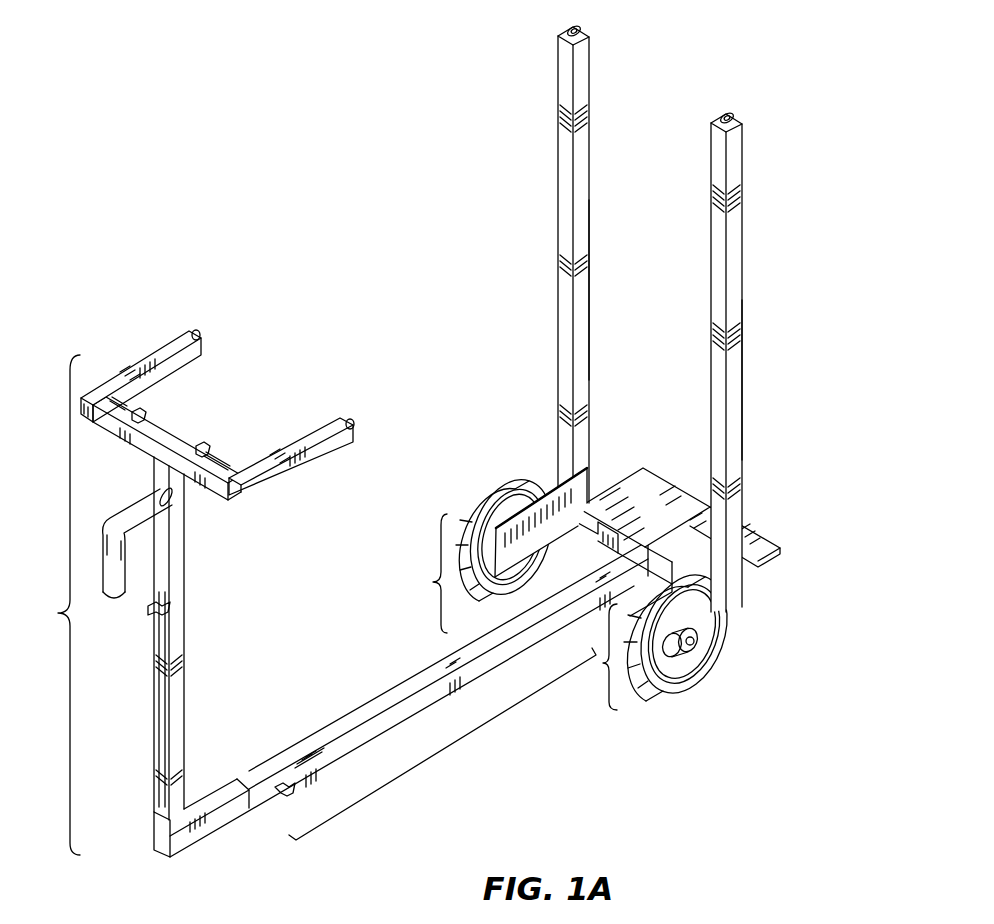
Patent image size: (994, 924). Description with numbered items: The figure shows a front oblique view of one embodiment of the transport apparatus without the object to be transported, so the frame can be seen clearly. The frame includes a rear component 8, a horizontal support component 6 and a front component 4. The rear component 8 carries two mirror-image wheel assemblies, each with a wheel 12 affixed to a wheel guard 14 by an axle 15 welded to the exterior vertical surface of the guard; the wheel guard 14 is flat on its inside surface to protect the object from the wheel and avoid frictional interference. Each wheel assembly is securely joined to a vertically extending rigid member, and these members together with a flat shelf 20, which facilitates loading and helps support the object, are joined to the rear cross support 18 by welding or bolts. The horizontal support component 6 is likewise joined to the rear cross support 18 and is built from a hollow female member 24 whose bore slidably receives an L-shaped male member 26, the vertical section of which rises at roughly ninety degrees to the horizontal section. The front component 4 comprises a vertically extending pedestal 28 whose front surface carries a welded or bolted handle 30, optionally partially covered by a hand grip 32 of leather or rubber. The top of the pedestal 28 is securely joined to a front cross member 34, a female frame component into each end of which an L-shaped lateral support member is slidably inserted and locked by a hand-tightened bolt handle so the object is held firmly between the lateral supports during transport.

The front component 4 is at (57, 605).
The horizontal support component 6 is at (442, 744).
The rear component 8 is at (744, 670).
The wheel 12 is at (488, 502).
The wheel guard 14 is at (528, 517).
The axle 15 is at (688, 645).
The rear cross support 18 is at (603, 537).
The flat shelf 20 is at (633, 485).
The hollow female member 24 is at (402, 690).
The male member 26 is at (222, 807).
The vertically extending pedestal 28 is at (178, 660).
The handle 30 is at (106, 510).
The hand grip 32 is at (97, 594).
The front cross member 34 is at (133, 440).